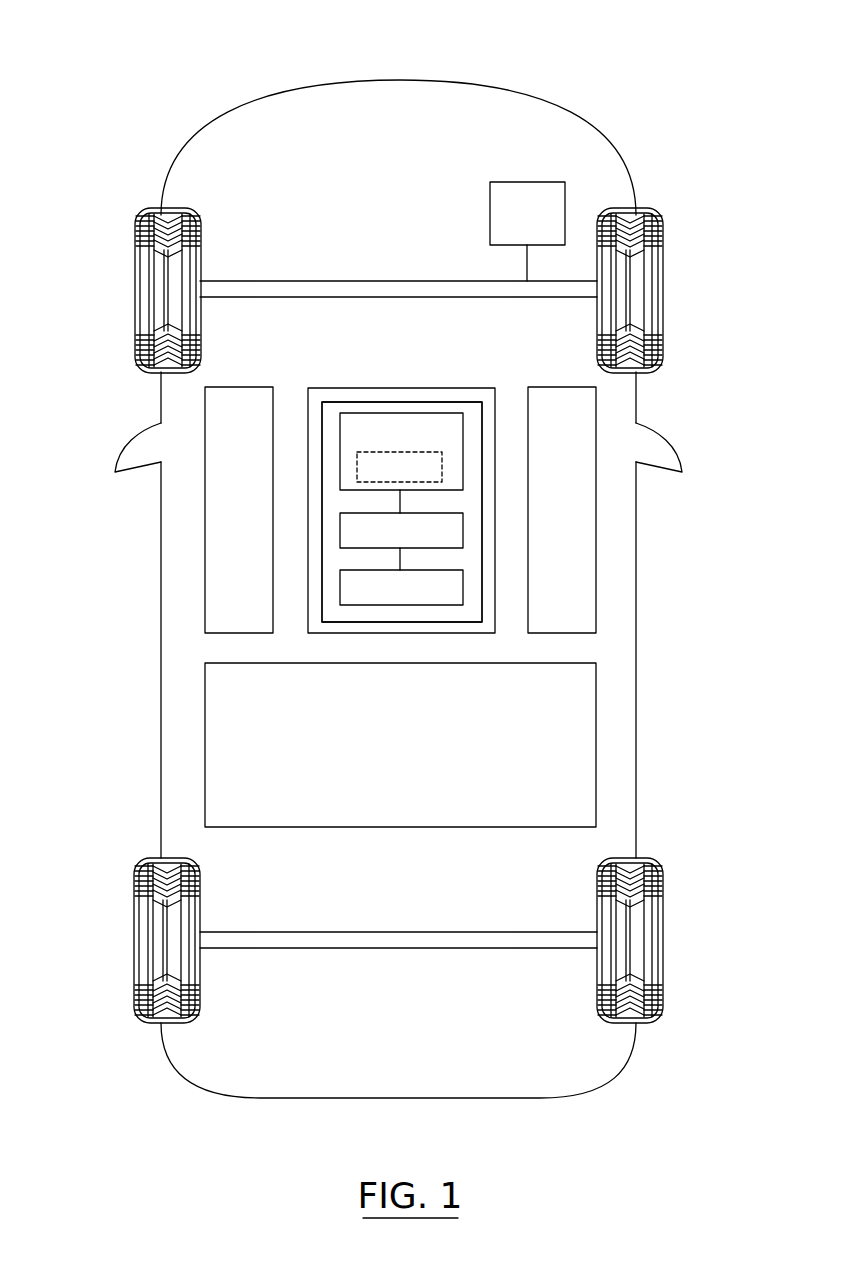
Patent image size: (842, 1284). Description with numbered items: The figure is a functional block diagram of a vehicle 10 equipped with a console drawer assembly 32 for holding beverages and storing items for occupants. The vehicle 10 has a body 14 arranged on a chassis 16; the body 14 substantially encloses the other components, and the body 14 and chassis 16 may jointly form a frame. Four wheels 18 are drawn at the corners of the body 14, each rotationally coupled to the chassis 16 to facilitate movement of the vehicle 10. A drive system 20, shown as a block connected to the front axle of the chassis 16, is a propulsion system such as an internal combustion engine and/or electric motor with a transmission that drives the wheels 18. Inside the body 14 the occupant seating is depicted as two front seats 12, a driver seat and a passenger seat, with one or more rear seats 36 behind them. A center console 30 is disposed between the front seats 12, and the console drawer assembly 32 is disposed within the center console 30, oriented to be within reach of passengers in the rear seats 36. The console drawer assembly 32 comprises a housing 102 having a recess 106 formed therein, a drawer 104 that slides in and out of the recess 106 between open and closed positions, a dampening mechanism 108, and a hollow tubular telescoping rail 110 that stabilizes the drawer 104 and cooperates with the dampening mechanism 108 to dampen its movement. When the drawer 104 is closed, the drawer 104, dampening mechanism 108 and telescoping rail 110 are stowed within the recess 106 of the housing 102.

The vehicle 10 is at (212, 98).
The front seats 12 is at (225, 530).
The body 14 is at (173, 573).
The chassis 16 is at (325, 274).
The wheels 18 is at (148, 283).
The drive system 20 is at (527, 231).
The center console 30 is at (465, 388).
The console drawer assembly 32 is at (343, 396).
The rear seats 36 is at (400, 745).
The housing 102 is at (388, 395).
The drawer 104 is at (399, 467).
The recess 106 is at (401, 463).
The dampening mechanism 108 is at (381, 543).
The telescoping rail 110 is at (401, 587).